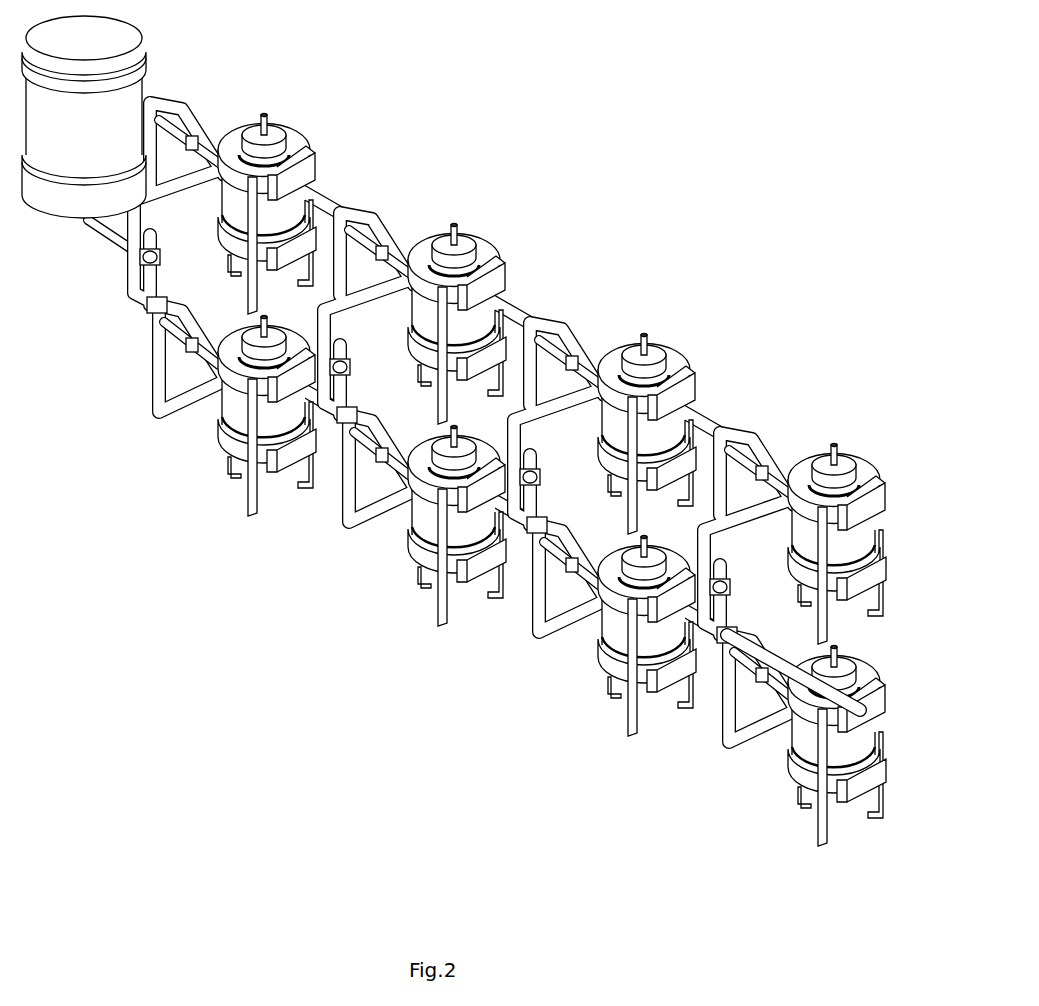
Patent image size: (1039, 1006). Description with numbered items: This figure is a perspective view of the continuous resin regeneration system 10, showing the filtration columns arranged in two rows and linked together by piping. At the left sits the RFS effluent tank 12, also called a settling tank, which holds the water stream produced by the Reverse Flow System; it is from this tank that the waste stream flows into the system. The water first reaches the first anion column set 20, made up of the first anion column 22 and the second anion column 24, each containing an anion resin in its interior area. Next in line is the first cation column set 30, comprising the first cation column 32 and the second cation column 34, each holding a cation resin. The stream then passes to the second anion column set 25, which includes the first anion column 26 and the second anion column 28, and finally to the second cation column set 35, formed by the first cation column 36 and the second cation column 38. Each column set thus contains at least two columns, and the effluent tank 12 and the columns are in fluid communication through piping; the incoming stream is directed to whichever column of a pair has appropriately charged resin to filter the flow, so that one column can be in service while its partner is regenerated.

The continuous resin regeneration system 10 is at (653, 88).
The RFS effluent tank 12 is at (95, 153).
The first anion column set 20 is at (310, 176).
The first anion column 22 is at (304, 204).
The second anion column 24 is at (234, 414).
The second anion column set 25 is at (685, 391).
The first anion column 26 is at (672, 412).
The second anion column 28 is at (616, 632).
The first cation column set 30 is at (499, 284).
The first cation column 32 is at (475, 322).
The second cation column 34 is at (425, 522).
The second cation column set 35 is at (868, 495).
The first cation column 36 is at (860, 540).
The second cation column 38 is at (800, 757).